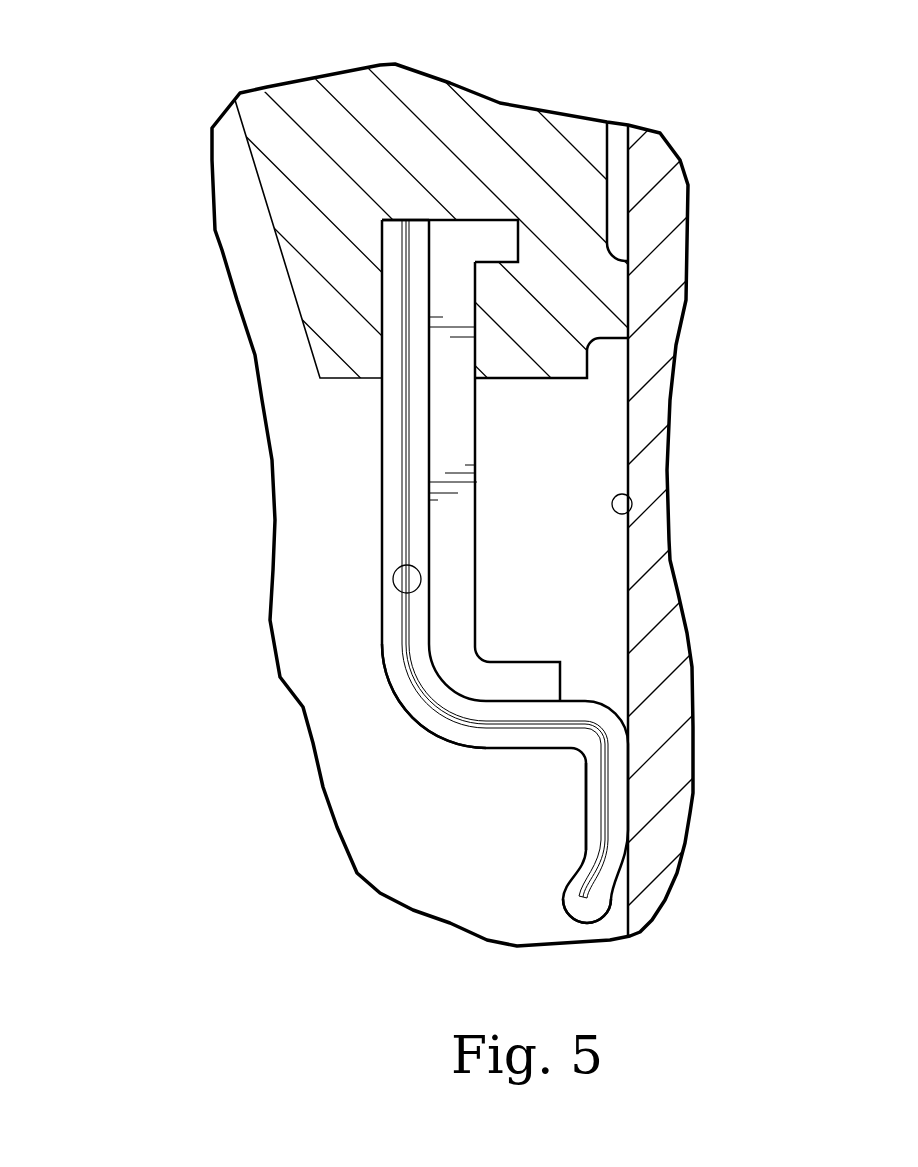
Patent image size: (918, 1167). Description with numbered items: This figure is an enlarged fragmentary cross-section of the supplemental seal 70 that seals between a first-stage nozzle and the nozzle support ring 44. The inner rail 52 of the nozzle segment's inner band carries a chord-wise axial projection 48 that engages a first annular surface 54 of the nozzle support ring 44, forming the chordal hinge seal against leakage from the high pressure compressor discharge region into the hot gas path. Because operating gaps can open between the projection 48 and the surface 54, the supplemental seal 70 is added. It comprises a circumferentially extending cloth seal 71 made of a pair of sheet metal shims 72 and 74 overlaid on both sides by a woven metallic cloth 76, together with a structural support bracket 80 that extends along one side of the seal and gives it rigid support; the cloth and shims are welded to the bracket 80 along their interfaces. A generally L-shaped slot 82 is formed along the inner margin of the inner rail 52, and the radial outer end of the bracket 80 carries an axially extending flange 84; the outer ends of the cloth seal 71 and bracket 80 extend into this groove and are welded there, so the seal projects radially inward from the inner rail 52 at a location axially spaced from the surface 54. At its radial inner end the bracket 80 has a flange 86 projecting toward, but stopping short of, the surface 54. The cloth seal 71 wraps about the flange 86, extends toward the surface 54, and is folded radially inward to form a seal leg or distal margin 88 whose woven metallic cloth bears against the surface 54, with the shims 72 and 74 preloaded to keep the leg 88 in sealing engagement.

The nozzle support ring 44 is at (668, 642).
The axial projection 48 is at (610, 283).
The inner rail 52 is at (350, 80).
The first annular surface 54 is at (630, 515).
The supplemental seal 70 is at (358, 571).
The cloth seal 71 is at (382, 413).
The sheet metal shim 72 is at (403, 598).
The sheet metal shim 74 is at (403, 658).
The woven metallic cloth 76 is at (388, 515).
The structural support bracket 80 is at (458, 505).
The L-shaped slot 82 is at (475, 283).
The axially extending flange 84 is at (498, 243).
The flange 86 is at (517, 680).
The seal leg 88 is at (590, 832).